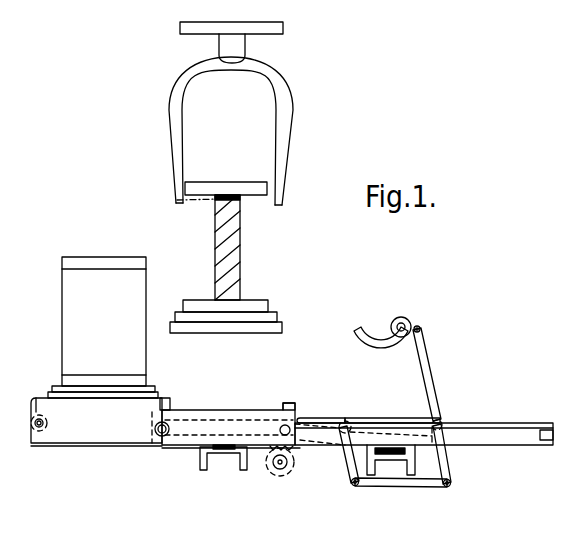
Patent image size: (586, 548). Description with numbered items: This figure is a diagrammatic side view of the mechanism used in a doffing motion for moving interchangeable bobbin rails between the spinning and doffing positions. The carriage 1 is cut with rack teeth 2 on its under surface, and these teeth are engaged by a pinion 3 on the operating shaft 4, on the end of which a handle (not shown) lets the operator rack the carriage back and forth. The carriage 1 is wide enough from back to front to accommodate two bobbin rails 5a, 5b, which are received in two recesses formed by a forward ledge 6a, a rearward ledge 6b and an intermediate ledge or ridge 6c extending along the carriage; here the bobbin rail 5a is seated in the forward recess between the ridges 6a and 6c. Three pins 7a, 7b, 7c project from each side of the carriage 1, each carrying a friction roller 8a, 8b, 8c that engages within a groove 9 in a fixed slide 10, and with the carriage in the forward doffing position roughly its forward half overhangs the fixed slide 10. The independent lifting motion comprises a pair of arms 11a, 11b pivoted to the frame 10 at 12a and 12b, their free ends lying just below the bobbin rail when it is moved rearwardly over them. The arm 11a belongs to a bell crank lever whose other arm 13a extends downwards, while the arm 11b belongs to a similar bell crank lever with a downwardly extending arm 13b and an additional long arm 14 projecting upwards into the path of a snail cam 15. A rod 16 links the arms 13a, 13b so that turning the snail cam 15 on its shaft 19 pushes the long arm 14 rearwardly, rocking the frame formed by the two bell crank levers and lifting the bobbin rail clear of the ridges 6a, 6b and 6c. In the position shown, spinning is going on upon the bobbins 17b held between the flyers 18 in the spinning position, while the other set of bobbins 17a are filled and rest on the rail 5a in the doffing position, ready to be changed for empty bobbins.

The carriage 1 is at (96, 422).
The rack teeth 2 is at (294, 448).
The pinion 3 is at (279, 470).
The operating shaft 4 is at (284, 470).
The bobbin rail 5a is at (104, 398).
The bobbin rail 5b is at (263, 330).
The forward ledge 6a is at (42, 398).
The rearward ledge 6b is at (291, 408).
The intermediate ledge 6c is at (170, 400).
The pin 7a is at (46, 425).
The pin 7b is at (156, 454).
The pin 7c is at (302, 440).
The friction roller 8a is at (45, 445).
The friction roller 8b is at (155, 425).
The friction roller 8c is at (280, 436).
The groove 9 is at (513, 440).
The fixed slide 10 is at (185, 414).
The arm 11a is at (325, 419).
The arm 11b is at (405, 418).
The pivot 12a is at (347, 424).
The pivot 12b is at (448, 422).
The downwardly extending arm 13a is at (357, 470).
The downwardly extending arm 13b is at (452, 465).
The long arm 14 is at (425, 368).
The snail cam 15 is at (354, 338).
The rod 16 is at (430, 485).
The bobbins 17a is at (93, 312).
The bobbins 17b is at (233, 248).
The flyers 18 is at (280, 135).
The cam shaft 19 is at (404, 324).